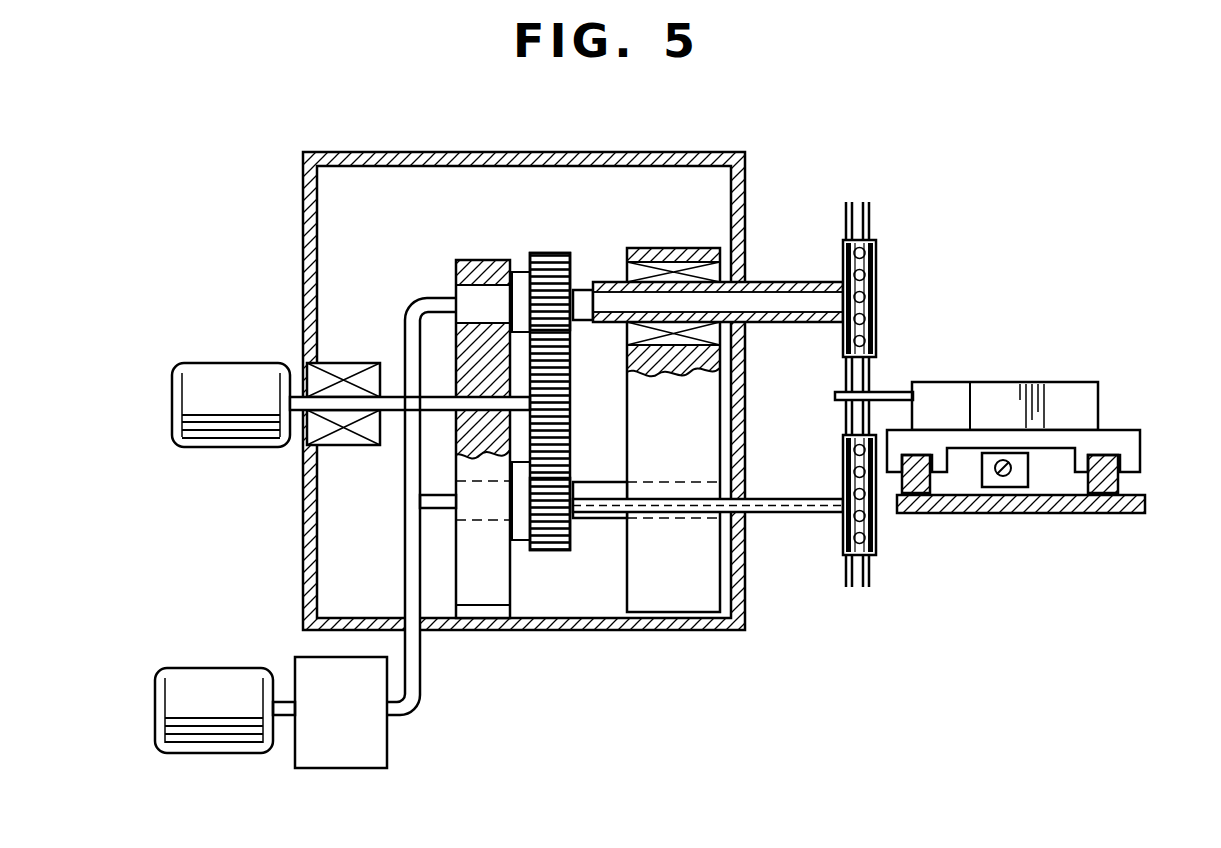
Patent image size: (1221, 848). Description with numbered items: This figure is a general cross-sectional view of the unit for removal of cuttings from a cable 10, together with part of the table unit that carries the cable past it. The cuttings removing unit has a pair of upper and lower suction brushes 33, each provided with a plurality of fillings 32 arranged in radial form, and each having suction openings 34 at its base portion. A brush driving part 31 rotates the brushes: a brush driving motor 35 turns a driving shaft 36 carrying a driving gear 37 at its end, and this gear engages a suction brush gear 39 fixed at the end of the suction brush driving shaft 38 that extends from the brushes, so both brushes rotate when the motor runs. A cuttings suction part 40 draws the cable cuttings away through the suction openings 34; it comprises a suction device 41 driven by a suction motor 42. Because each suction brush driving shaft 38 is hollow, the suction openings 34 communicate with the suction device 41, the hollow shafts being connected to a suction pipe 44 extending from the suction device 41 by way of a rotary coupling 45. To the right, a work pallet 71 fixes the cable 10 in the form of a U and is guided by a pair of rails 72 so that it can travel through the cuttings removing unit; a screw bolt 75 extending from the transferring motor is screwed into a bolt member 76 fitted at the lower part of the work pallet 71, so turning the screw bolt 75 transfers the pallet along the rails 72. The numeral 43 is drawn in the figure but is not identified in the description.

The cable 10 is at (892, 393).
The brush driving part 31 is at (292, 300).
The fillings 32 is at (872, 218).
The suction brushes 33 is at (877, 263).
The suction openings 34 is at (877, 320).
The brush driving motor 35 is at (195, 447).
The driving shaft 36 is at (392, 397).
The driving gear 37 is at (571, 385).
The suction brush driving shaft 38 is at (758, 283).
The suction brush gear 39 is at (552, 253).
The cuttings suction part 40 is at (310, 567).
The suction device 41 is at (350, 768).
The suction motor 42 is at (157, 728).
The hollow shaft 43 is at (800, 298).
The suction pipe 44 is at (442, 506).
The rotary coupling 45 is at (456, 275).
The work pallet 71 is at (1008, 390).
The rails 72 is at (1140, 484).
The screw bolt 75 is at (1023, 474).
The bolt member 76 is at (1035, 460).